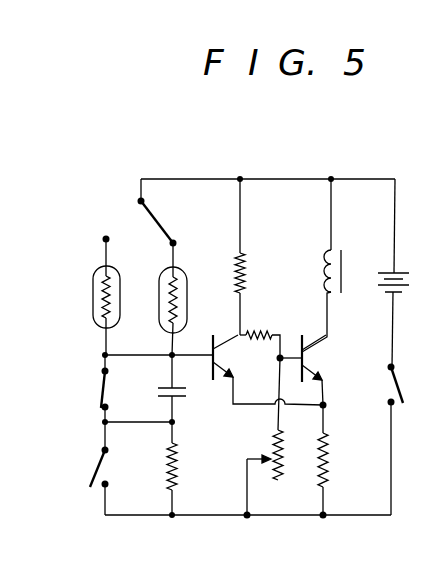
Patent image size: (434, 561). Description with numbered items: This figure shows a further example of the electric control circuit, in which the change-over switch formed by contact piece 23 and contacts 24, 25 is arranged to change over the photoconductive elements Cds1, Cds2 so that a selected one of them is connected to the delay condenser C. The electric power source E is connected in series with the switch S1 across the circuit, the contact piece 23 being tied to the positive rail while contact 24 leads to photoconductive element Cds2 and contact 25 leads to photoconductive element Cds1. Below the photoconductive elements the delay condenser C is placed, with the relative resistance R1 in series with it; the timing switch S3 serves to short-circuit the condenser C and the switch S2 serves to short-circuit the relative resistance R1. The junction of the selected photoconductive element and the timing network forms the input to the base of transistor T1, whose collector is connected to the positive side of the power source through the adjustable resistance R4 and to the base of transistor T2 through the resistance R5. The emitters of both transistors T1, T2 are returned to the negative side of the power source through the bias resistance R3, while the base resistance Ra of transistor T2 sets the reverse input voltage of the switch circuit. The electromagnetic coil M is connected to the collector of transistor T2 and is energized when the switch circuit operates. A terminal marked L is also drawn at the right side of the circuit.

The contact piece 23 is at (158, 211).
The contact 24 is at (94, 238).
The contact 25 is at (189, 246).
The photoconductive element Cds2 is at (72, 310).
The photoconductive element Cds1 is at (155, 311).
The switch S1 is at (380, 440).
The switch S2 is at (84, 468).
The timing switch S3 is at (84, 388).
The delay condenser C is at (168, 388).
The relative resistance R1 is at (185, 470).
The bias resistance R3 is at (336, 462).
The adjustable resistance R4 is at (254, 257).
The resistance R5 is at (260, 332).
The base resistance Ra is at (279, 438).
The transistor T1 is at (268, 370).
The transistor T2 is at (324, 370).
The electromagnetic coil M is at (326, 265).
The electric power source E is at (391, 273).
The load terminal L is at (426, 361).